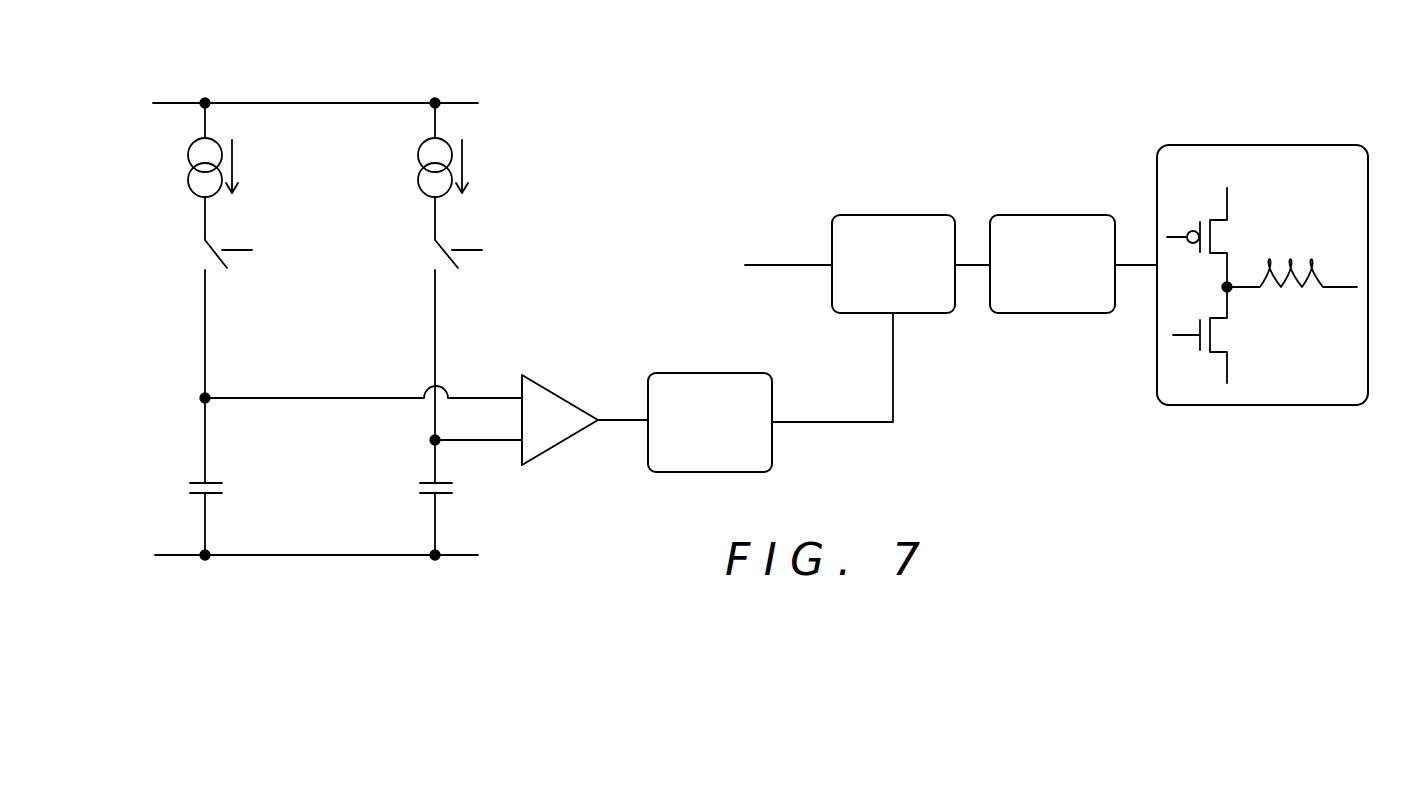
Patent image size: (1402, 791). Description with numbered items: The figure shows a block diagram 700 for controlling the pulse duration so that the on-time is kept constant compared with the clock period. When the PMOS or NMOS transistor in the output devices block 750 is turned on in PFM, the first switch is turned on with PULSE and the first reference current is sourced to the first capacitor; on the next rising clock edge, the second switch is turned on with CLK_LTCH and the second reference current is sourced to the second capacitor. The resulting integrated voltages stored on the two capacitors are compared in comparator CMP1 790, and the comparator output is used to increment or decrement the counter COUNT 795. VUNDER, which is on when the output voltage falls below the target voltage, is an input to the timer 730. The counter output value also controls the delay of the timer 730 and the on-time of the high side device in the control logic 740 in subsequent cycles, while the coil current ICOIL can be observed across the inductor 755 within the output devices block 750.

The power converter control circuit 700 is at (687, 48).
The timer 730 is at (905, 216).
The logic 740 is at (1063, 216).
The output devices 750 is at (1312, 146).
The inductor 755 is at (1298, 254).
The comparator CMP1 790 is at (547, 389).
The counter COUNT 795 is at (722, 375).